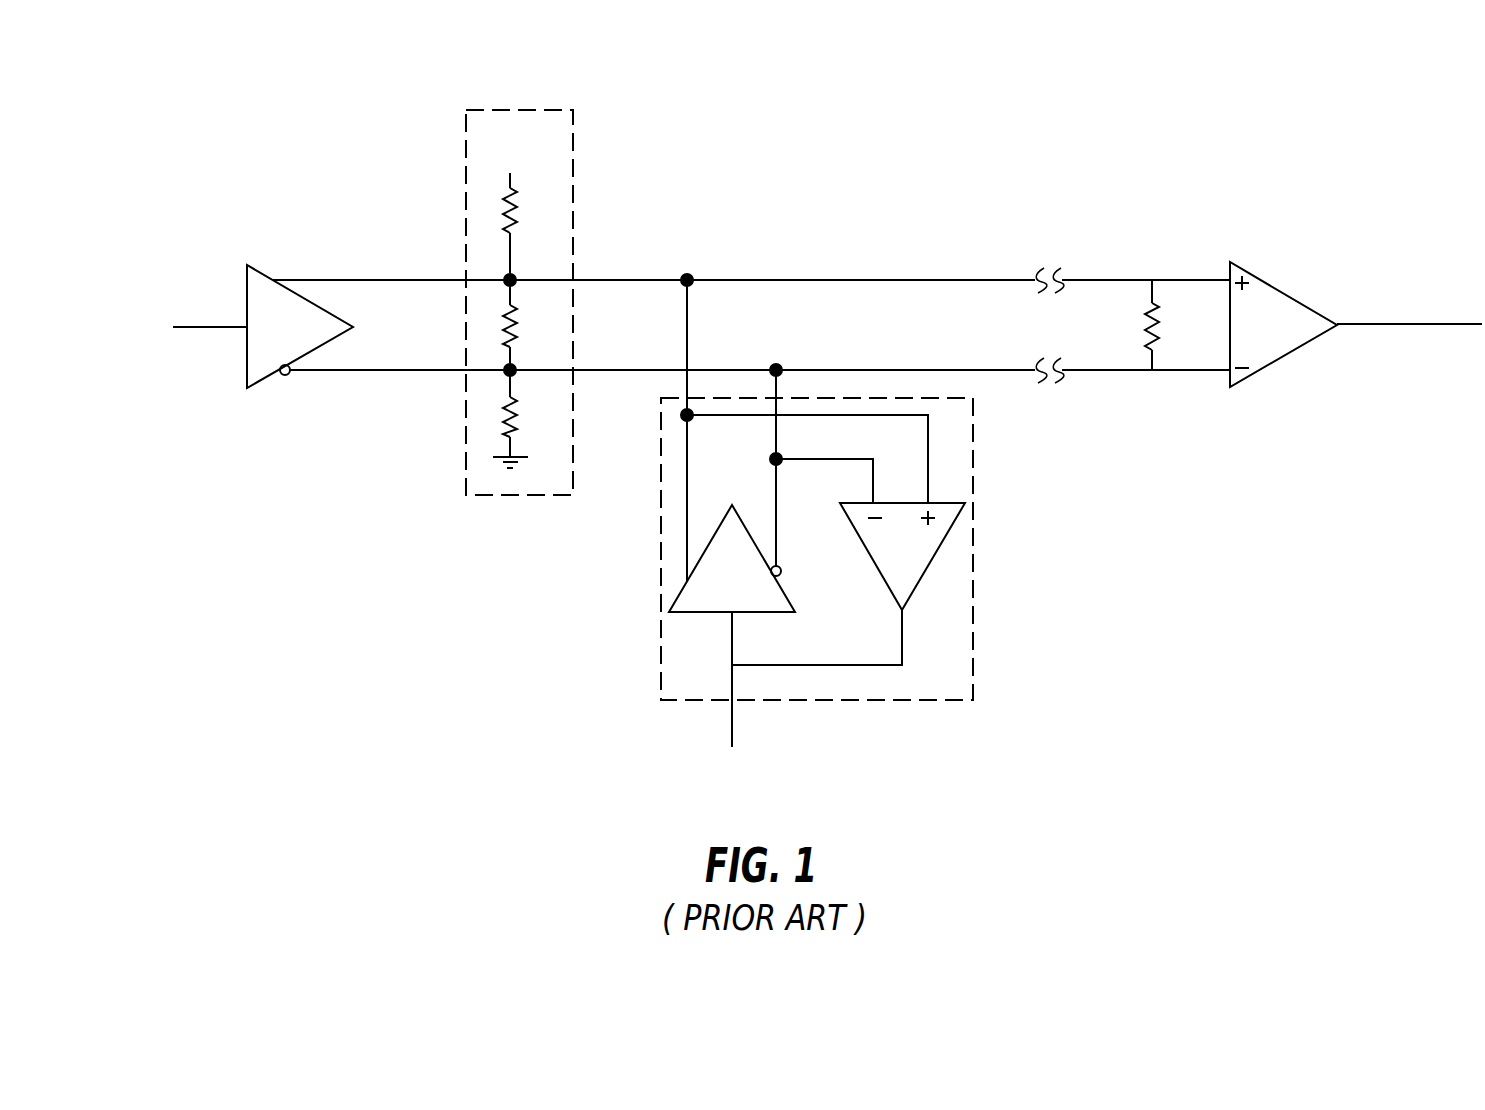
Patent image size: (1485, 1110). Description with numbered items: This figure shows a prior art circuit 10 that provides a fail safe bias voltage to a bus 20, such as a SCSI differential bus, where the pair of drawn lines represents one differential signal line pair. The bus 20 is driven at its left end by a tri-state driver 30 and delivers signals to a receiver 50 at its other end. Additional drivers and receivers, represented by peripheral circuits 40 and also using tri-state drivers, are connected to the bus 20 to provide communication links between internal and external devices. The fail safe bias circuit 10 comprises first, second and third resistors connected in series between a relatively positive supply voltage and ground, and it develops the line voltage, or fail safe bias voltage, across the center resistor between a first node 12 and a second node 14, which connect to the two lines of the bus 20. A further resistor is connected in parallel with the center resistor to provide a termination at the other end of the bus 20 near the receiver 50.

The fail safe bias circuit 10 is at (520, 110).
The first node 12 is at (514, 276).
The second node 14 is at (510, 372).
The bus 20 is at (1005, 280).
The tri-state driver 30 is at (258, 268).
The peripheral circuits 40 is at (855, 700).
The receiver 50 is at (1243, 268).